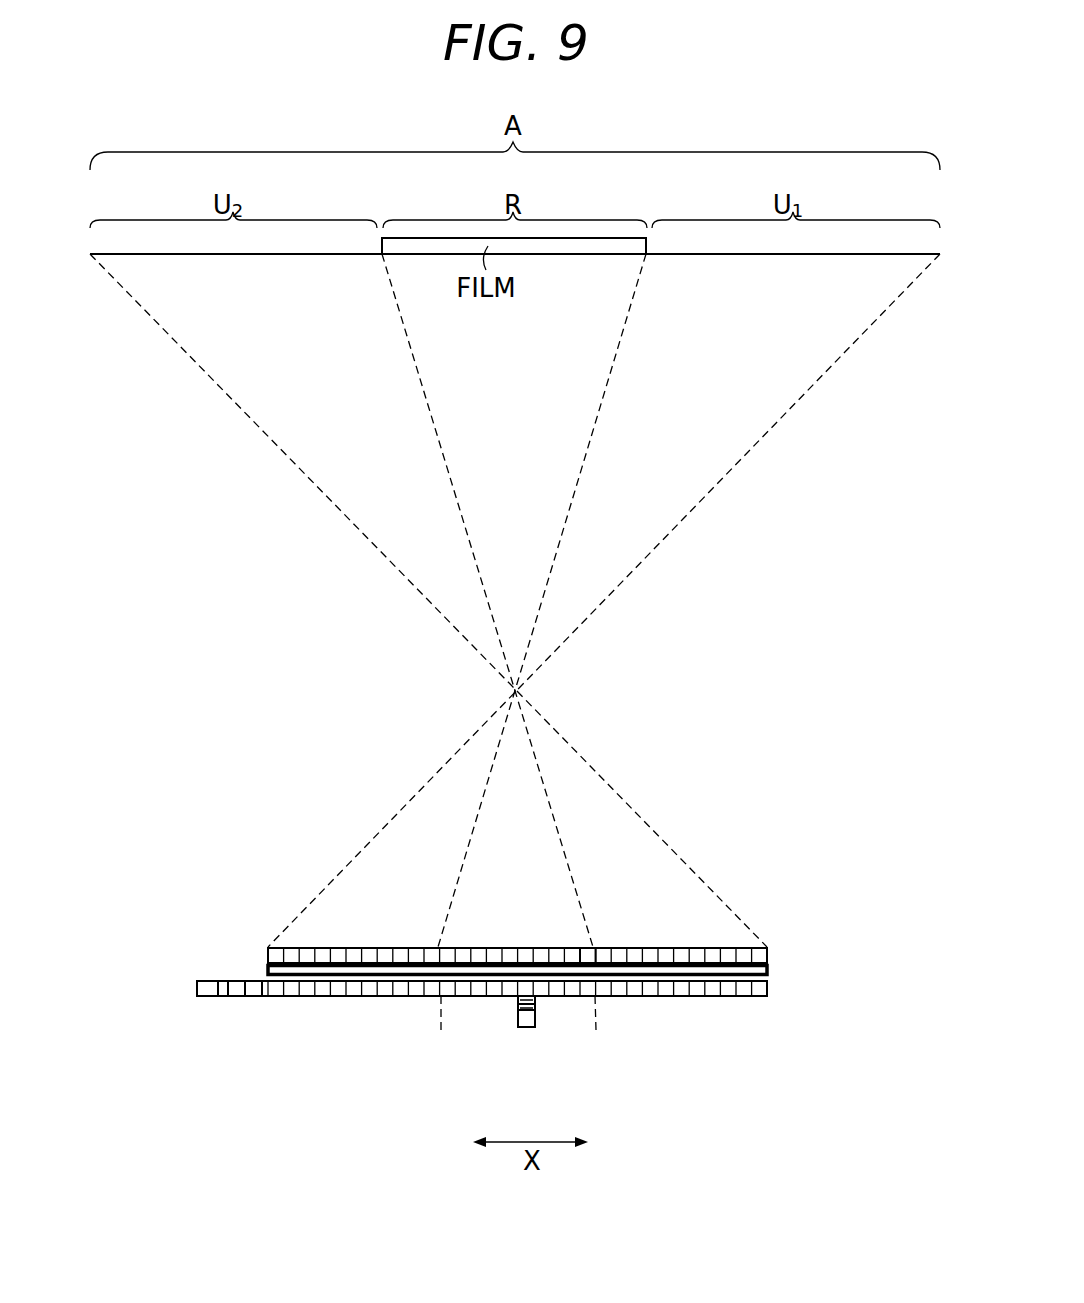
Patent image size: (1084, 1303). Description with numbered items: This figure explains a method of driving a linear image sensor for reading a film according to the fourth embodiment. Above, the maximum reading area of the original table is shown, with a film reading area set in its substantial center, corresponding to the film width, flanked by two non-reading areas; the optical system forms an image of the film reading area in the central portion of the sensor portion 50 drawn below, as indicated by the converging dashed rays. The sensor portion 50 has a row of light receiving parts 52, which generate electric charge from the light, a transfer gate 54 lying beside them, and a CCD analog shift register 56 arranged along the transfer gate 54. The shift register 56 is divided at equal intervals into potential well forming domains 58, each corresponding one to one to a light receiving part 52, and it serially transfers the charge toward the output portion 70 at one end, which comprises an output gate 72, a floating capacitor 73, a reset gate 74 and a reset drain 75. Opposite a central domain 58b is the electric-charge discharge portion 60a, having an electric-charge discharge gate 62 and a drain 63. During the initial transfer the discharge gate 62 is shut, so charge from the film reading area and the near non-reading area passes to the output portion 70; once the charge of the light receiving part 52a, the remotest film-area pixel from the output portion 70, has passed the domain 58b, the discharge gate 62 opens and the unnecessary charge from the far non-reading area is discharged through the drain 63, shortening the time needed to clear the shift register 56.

The sensor portion 50 is at (790, 967).
The light receiving parts 52 is at (276, 958).
The light receiving part set remotest from the output portion 52a is at (585, 956).
The transfer gate 54 is at (268, 970).
The CCD analog shift register 56 is at (332, 1002).
The potential well forming domains 58 is at (282, 990).
The domain connected to the electric-charge discharge portion 58b is at (516, 1001).
The detection element 60a is at (470, 1052).
The electric-charge discharge gate 62 is at (518, 1003).
The drain 63 is at (518, 1012).
The output portion 70 is at (201, 1041).
The output gate 72 is at (251, 1019).
The floating capacitor 73 is at (237, 990).
The reset gate 74 is at (222, 990).
The reset drain 75 is at (207, 990).